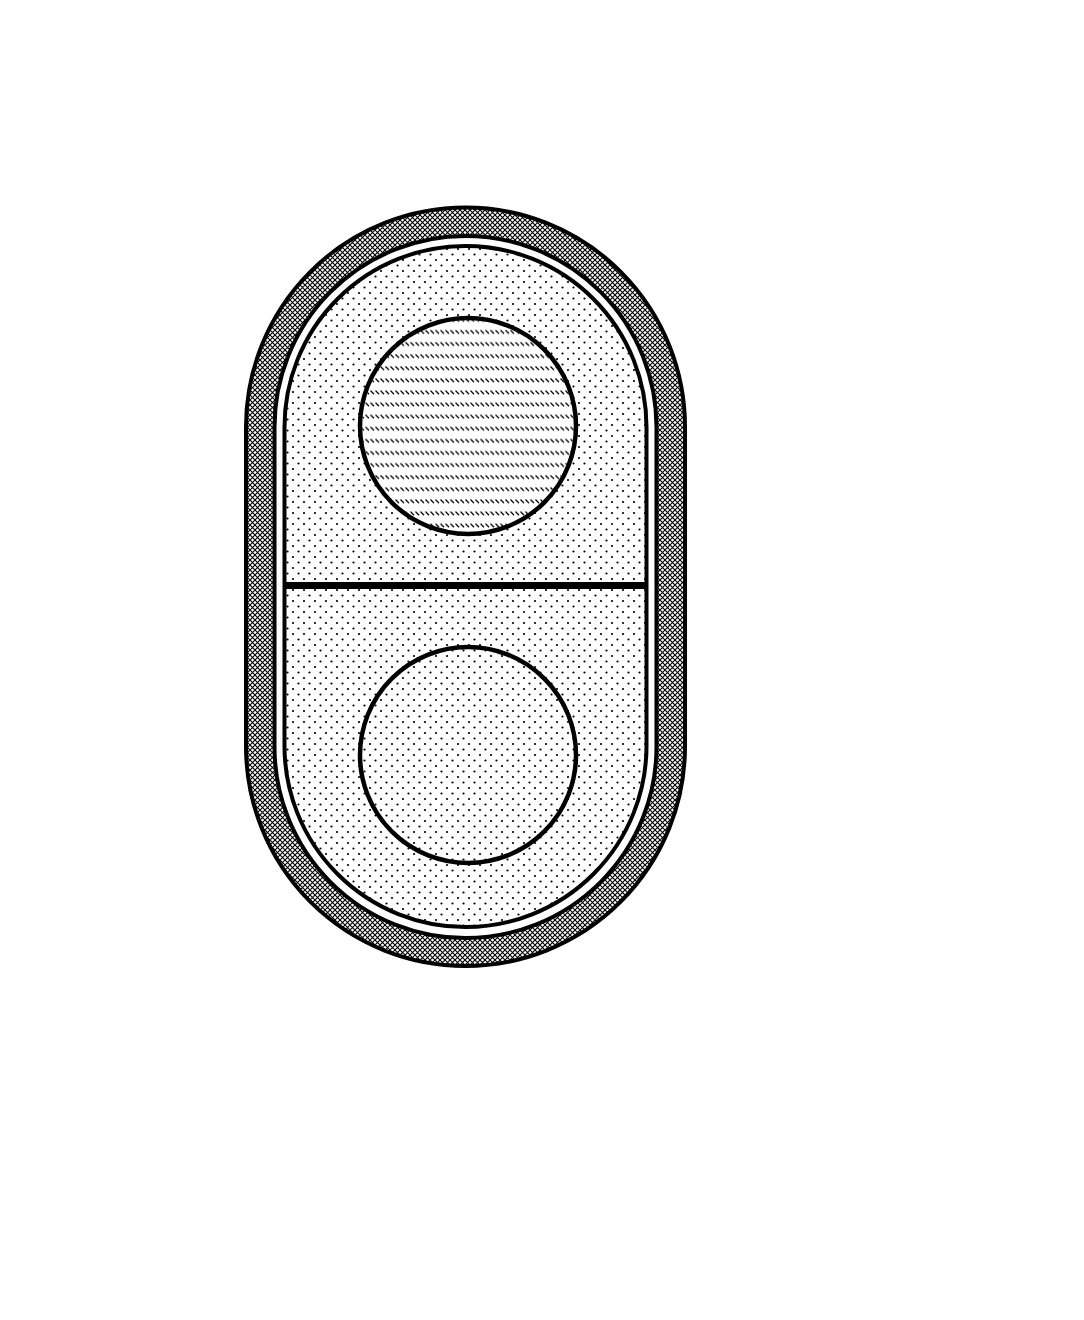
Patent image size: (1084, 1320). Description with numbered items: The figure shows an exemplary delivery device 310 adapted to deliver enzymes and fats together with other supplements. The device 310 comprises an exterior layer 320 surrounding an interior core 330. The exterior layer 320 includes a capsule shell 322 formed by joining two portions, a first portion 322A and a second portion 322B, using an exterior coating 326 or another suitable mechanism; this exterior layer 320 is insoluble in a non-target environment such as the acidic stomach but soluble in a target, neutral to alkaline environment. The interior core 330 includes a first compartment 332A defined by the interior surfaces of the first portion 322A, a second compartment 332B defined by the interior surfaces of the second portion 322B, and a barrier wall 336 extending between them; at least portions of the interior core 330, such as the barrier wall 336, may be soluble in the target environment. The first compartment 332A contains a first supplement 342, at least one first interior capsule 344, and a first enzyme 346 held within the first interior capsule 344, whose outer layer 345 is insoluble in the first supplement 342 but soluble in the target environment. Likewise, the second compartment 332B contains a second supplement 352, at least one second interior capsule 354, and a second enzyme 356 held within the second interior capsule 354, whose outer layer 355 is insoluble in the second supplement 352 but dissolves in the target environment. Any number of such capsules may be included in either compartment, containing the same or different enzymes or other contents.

The device 310 is at (253, 242).
The exterior layer 320 is at (533, 180).
The capsule shell 322 is at (535, 252).
The first portion 322A is at (658, 493).
The second portion 322B is at (650, 743).
The exterior coating 326 is at (480, 203).
The interior core 330 is at (620, 447).
The first compartment 332A is at (335, 540).
The second compartment 332B is at (322, 802).
The barrier wall 336 is at (597, 590).
The first supplement 342 is at (613, 370).
The first interior capsule 344 is at (395, 390).
The outer layer 345 is at (437, 321).
The first enzyme 346 is at (490, 388).
The second supplement 352 is at (523, 890).
The second interior capsule 354 is at (395, 742).
The outer layer 355 is at (468, 863).
The second enzyme 356 is at (483, 797).